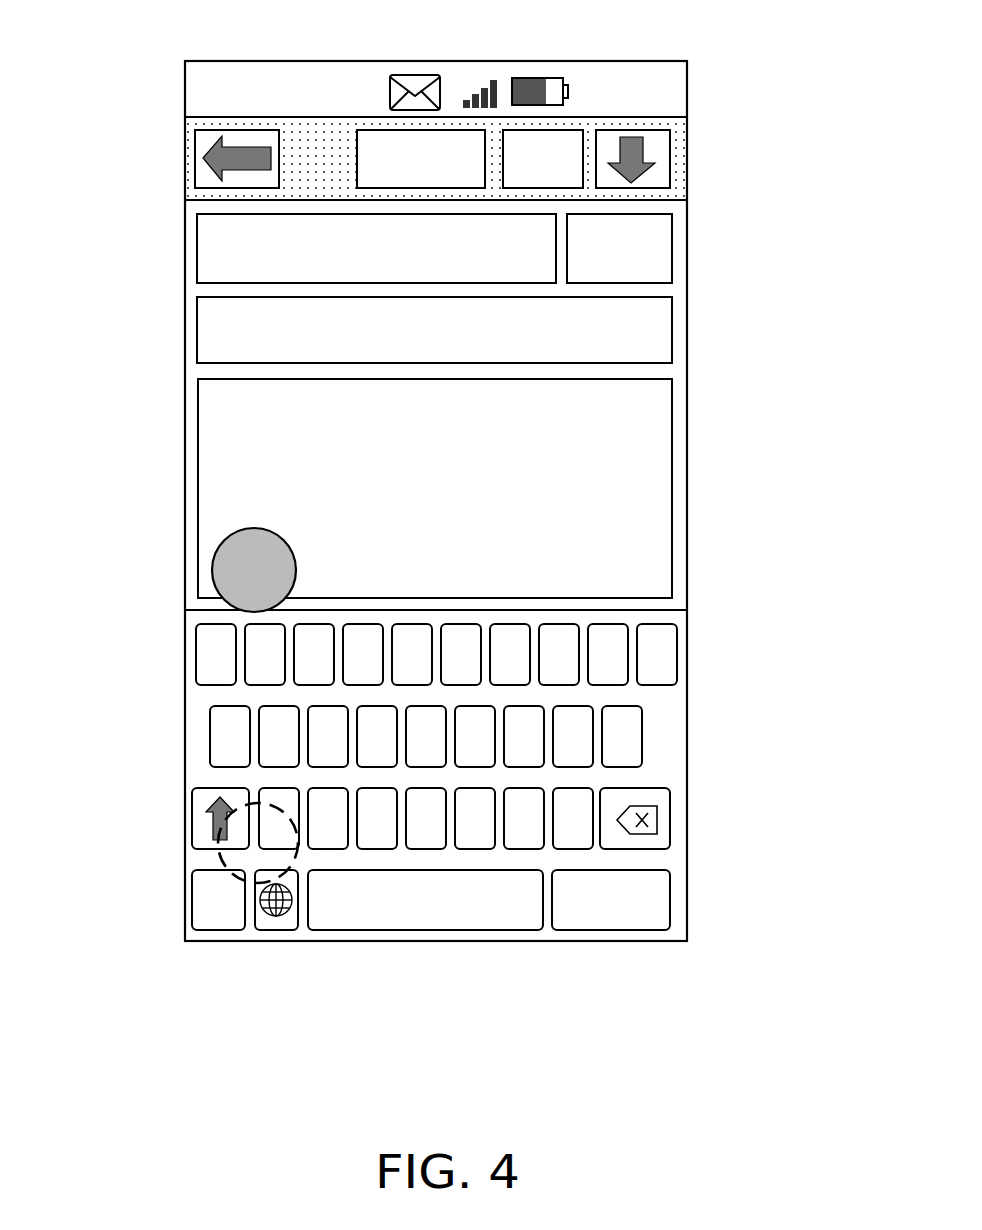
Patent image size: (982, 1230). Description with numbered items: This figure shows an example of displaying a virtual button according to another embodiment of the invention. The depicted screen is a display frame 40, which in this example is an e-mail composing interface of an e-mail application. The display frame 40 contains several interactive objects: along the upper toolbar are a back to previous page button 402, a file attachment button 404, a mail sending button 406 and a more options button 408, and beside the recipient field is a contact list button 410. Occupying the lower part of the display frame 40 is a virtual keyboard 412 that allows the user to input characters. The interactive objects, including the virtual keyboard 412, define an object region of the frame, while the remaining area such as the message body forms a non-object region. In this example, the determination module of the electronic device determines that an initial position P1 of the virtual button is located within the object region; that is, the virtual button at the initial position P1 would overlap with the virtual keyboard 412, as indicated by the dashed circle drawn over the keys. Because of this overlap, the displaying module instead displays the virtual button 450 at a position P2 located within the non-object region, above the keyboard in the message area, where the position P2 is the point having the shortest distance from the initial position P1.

The display frame 40 is at (688, 465).
The back to previous page button 402 is at (195, 152).
The file attachment button 404 is at (378, 130).
The mail sending button 406 is at (572, 130).
The more options button 408 is at (672, 152).
The contact list button 410 is at (673, 250).
The virtual keyboard 412 is at (665, 773).
The virtual button 450 is at (212, 560).
The initial position P1 is at (228, 858).
The position P2 is at (258, 543).